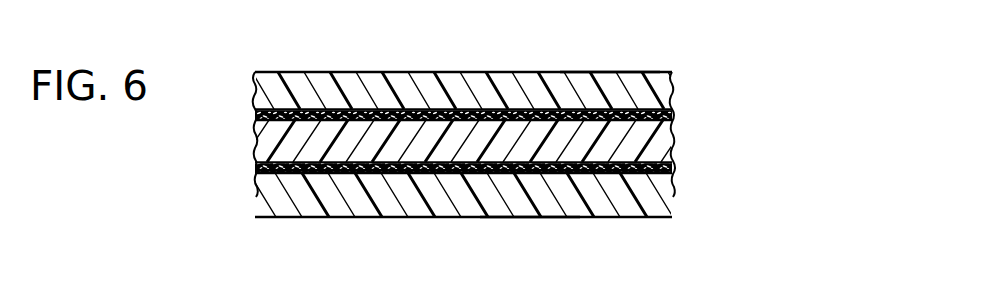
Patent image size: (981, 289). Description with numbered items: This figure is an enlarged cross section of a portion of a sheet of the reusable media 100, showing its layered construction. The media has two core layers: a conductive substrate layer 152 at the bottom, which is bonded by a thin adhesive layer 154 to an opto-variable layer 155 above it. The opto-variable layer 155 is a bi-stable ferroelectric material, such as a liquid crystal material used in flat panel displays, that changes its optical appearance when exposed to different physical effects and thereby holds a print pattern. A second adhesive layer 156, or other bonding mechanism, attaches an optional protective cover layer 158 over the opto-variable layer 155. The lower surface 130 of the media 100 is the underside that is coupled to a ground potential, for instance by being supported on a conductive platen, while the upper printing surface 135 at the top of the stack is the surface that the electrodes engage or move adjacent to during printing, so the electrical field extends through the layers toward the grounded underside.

The reusable media 100 is at (719, 39).
The lower surface 130 is at (532, 218).
The upper printing surface 135 is at (610, 72).
The conductive substrate layer 152 is at (277, 195).
The thin adhesive layer 154 is at (265, 168).
The opto-variable layer 155 is at (268, 140).
The second adhesive layer 156 is at (263, 115).
The protective cover layer 158 is at (260, 92).